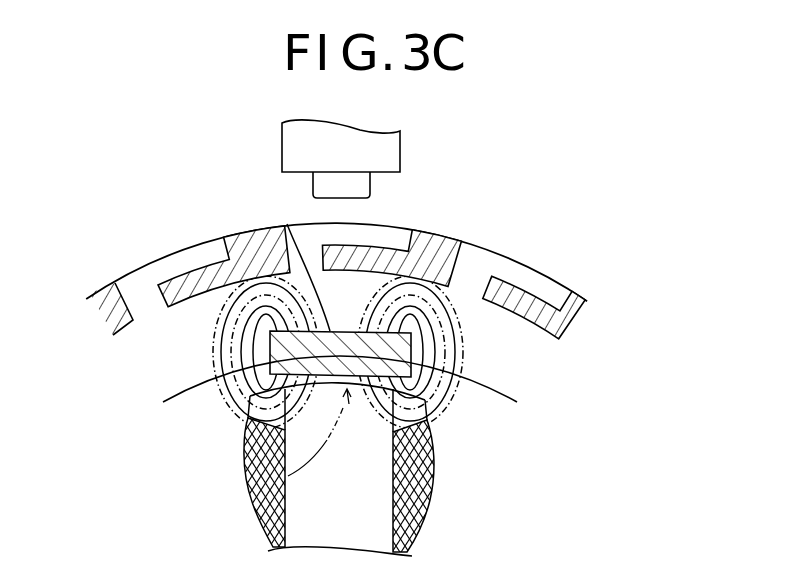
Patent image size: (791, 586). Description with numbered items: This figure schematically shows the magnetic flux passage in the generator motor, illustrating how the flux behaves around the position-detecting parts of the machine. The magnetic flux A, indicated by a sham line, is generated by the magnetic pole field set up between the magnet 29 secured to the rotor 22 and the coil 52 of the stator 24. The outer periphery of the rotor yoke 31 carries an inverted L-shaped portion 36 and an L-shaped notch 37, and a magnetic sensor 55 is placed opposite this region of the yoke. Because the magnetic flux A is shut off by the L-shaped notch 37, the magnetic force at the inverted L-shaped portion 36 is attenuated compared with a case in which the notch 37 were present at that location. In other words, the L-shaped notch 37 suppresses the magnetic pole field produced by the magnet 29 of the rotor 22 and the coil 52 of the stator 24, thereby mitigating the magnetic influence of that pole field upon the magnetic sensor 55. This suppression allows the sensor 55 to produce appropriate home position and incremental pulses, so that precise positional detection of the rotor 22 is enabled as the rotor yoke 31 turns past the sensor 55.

The rotor 22 is at (531, 251).
The stator 24 is at (288, 476).
The magnet 29 is at (286, 227).
The rotor yoke 31 is at (515, 352).
The inverted L-shaped portion 36 is at (385, 226).
The L-shaped notch 37 is at (442, 233).
The coil 52 is at (247, 459).
The magnetic sensor 55 is at (281, 150).
The magnetic flux A is at (453, 406).